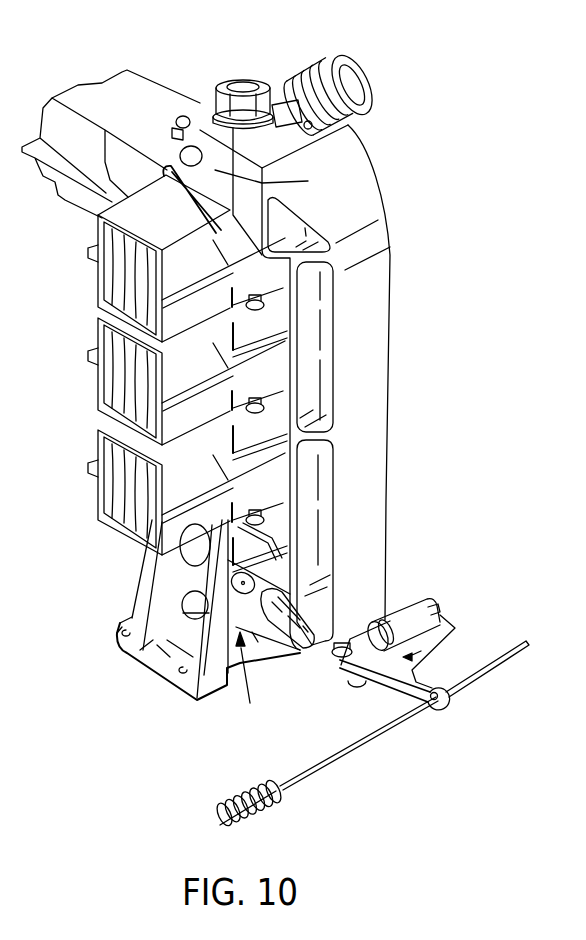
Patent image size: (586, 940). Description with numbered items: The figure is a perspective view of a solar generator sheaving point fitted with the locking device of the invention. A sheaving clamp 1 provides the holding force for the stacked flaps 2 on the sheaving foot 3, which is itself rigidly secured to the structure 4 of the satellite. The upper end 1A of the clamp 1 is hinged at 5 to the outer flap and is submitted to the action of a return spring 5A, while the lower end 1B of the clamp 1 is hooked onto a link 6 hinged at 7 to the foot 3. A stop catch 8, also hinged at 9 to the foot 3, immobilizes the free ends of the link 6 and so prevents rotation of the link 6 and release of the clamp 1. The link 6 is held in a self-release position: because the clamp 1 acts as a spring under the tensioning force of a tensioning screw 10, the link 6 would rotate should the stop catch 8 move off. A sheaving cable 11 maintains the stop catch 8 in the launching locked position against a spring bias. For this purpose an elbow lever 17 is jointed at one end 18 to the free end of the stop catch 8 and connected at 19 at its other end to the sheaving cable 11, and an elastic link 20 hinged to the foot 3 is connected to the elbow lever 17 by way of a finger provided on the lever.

The sheaving clamp 1 is at (368, 330).
The upper end of the clamp 1A is at (308, 186).
The lower end of the clamp 1B is at (254, 635).
The flaps 2 is at (130, 290).
The sheaving foot 3 is at (157, 613).
The structure of the satellite 4 is at (146, 701).
The hinge 5 is at (170, 170).
The return spring 5A is at (318, 68).
The link 6 is at (245, 546).
The hinge of the link 7 is at (192, 553).
The stop catch 8 is at (246, 677).
The hinge of the stop catch 9 is at (120, 623).
The tensioning screw 10 is at (234, 86).
The sheaving cable 11 is at (503, 667).
The elbow lever 17 is at (440, 643).
The joint of the elbow lever to the stop catch 18 is at (338, 654).
The connection of the elbow lever to the sheaving cable 19 is at (448, 708).
The elastic link 20 is at (406, 627).